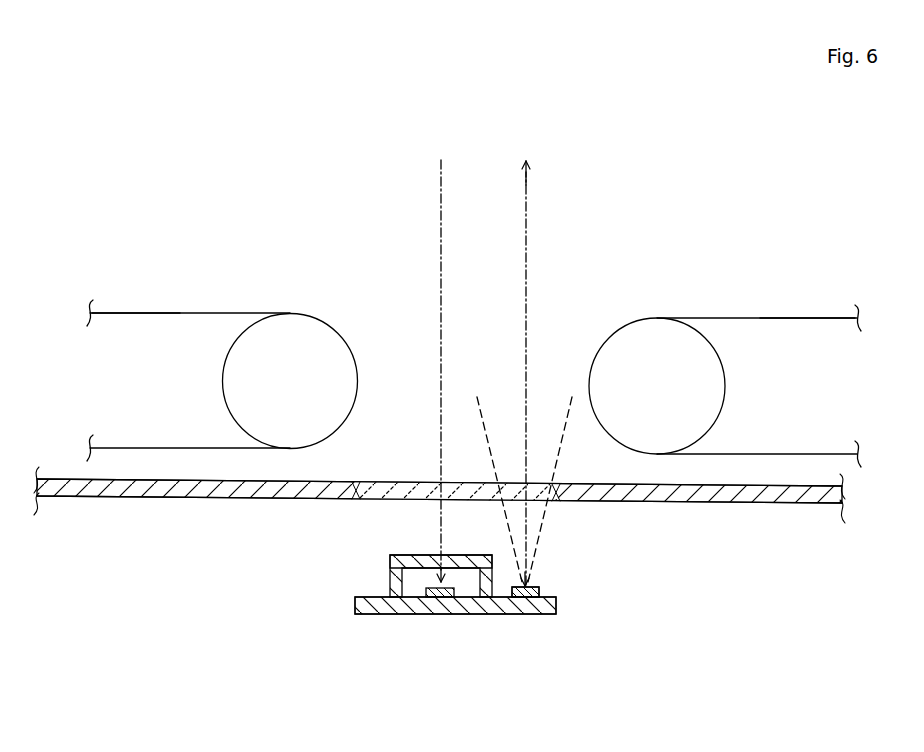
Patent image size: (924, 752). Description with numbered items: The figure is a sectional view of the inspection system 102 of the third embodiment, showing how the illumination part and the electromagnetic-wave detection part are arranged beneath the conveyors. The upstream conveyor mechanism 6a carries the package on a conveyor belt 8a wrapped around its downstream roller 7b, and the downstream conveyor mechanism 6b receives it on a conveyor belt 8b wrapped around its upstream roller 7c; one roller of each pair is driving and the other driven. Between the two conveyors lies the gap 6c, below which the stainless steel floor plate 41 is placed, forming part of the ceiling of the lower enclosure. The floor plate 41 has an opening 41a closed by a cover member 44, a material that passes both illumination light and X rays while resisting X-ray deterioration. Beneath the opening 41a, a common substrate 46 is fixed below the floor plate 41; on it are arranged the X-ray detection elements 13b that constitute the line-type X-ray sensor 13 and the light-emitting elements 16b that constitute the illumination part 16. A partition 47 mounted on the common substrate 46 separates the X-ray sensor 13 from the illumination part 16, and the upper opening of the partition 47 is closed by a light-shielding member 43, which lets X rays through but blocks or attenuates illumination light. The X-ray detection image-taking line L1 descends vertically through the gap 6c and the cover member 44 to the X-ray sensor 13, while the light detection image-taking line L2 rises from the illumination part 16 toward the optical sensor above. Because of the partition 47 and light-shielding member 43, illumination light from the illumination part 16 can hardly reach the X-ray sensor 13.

The inspection system 102 is at (167, 178).
The upstream conveyor mechanism 6a is at (758, 290).
The downstream conveyor mechanism 6b is at (206, 275).
The gap 6c is at (388, 368).
The downstream roller 7b is at (630, 345).
The upstream roller 7c is at (293, 340).
The conveyor belt 8a is at (815, 318).
The conveyor belt 8b is at (160, 312).
The floor plate 41 is at (745, 501).
The opening 41a is at (378, 480).
The cover member 44 is at (422, 482).
The light-shielding member 43 is at (416, 555).
The partition 47 is at (389, 583).
The X-ray sensor 13 is at (392, 614).
The X-ray detection element 13b is at (410, 597).
The illumination part 16 is at (546, 592).
The light-emitting element 16b is at (507, 597).
The common substrate 46 is at (487, 614).
The X-ray detection image-taking line L1 is at (441, 170).
The light detection image-taking line L2 is at (526, 193).